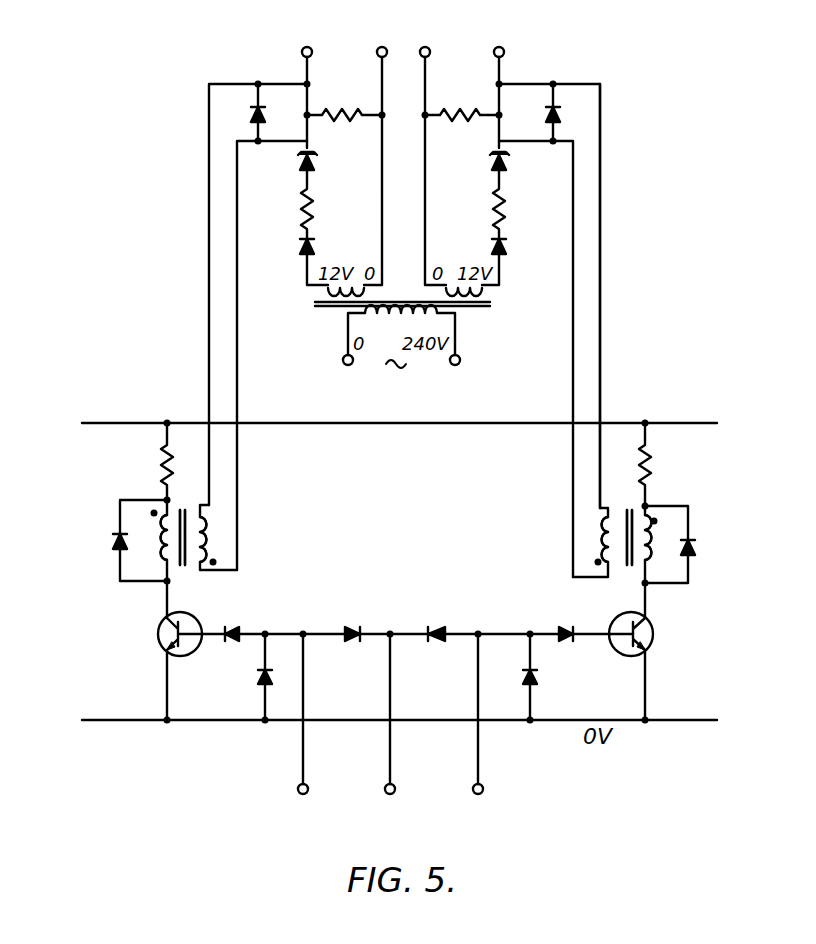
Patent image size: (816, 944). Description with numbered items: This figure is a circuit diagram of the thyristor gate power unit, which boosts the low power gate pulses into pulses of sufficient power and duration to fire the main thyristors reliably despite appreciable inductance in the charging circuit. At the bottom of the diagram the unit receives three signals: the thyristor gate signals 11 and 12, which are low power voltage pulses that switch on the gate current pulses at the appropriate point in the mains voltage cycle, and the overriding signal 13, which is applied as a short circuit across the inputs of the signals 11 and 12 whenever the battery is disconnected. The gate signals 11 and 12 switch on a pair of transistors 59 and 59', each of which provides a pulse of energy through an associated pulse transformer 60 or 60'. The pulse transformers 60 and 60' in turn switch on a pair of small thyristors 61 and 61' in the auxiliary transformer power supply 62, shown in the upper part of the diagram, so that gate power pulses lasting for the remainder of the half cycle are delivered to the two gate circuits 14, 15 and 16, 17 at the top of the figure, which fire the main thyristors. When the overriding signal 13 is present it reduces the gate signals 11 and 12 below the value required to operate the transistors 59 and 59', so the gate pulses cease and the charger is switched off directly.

The thyristor gate signal 11 is at (481, 727).
The thyristor gate signal 12 is at (306, 727).
The overriding signal 13 is at (393, 727).
The gate circuit 14 is at (502, 40).
The gate circuit 15 is at (428, 40).
The gate circuit 16 is at (385, 40).
The gate circuit 17 is at (310, 40).
The transistor 59 is at (195, 624).
The transistor 59' is at (615, 627).
The pulse transformer 60 is at (221, 537).
The pulse transformer 60' is at (656, 516).
The small thyristor 61 is at (329, 160).
The small thyristor 61' is at (478, 160).
The auxiliary transformer power supply 62 is at (606, 262).